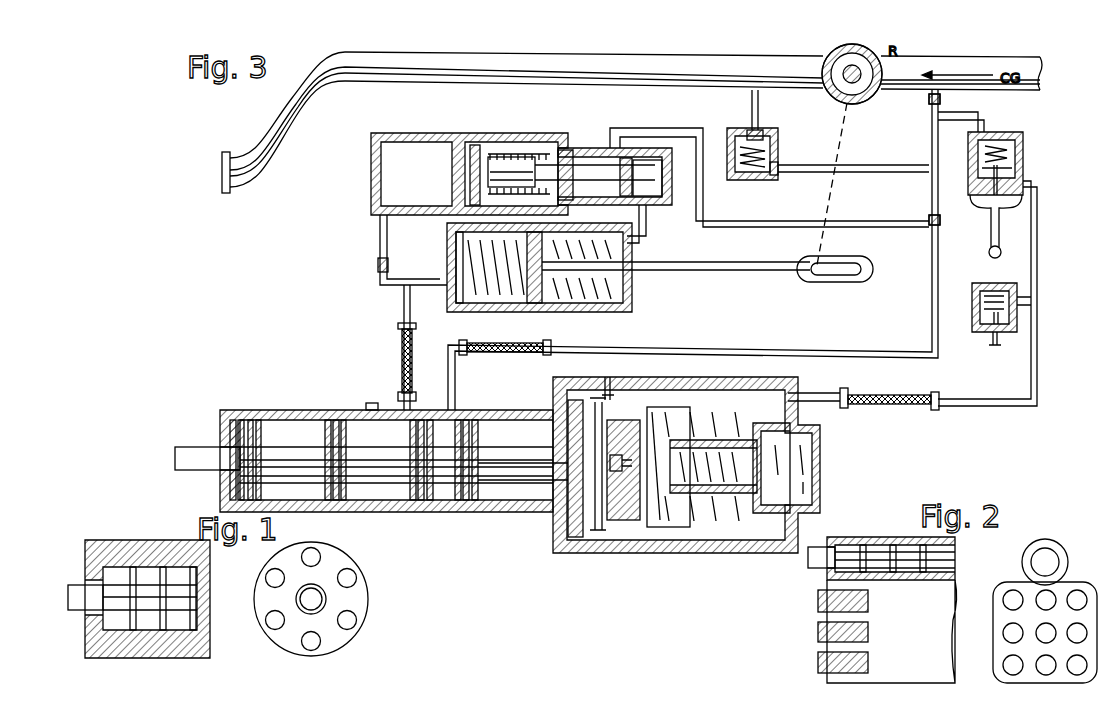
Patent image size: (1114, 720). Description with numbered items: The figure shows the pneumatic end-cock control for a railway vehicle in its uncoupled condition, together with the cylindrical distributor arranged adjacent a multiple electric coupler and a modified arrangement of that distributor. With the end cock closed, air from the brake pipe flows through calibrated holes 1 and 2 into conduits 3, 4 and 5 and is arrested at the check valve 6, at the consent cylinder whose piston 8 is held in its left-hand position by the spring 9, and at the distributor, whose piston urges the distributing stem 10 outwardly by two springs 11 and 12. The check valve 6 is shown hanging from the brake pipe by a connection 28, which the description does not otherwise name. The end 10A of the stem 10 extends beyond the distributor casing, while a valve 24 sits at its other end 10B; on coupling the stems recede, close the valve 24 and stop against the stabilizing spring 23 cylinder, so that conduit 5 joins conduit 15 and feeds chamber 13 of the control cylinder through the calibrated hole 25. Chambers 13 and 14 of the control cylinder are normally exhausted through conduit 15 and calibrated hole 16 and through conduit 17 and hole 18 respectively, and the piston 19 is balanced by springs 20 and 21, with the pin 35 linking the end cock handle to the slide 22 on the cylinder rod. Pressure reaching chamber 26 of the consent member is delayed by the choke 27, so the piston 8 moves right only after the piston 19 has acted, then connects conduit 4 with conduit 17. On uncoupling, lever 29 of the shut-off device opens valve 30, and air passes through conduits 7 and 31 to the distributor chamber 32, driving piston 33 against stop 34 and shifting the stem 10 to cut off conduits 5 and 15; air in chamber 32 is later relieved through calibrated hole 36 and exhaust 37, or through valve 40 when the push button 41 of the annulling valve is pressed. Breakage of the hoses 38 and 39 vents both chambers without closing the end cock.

The calibrated hole 1 is at (929, 99).
The calibrated hole 2 is at (929, 220).
The conduit 3 is at (871, 165).
The conduit 4 is at (690, 128).
The conduit 5 is at (930, 138).
The check valve 6 is at (772, 152).
The conduit 7 is at (950, 122).
The piston 8 is at (523, 160).
The spring 9 is at (550, 150).
The distributing stem 10 is at (418, 425).
The end of stem 10A is at (192, 442).
The end of stem 10B is at (560, 518).
The spring 11 is at (590, 532).
The spring 12 is at (738, 530).
The chamber 13 is at (487, 297).
The chamber 14 is at (590, 302).
The conduit 15 is at (412, 308).
The calibrated hole 16 is at (376, 399).
The conduit 17 is at (648, 218).
The hole 18 is at (660, 172).
The piston 19 is at (532, 304).
The spring 20 is at (470, 302).
The spring 21 is at (628, 308).
The slide 22 is at (832, 284).
The stabilizing spring 23 is at (700, 520).
The valve 24 is at (553, 468).
The calibrated hole 25 is at (393, 303).
The chamber 26 is at (392, 180).
The calibrated hole 27 is at (371, 271).
The pipe 28 is at (759, 113).
The lever 29 is at (990, 237).
The valve 30 is at (1015, 158).
The conduit 31 is at (982, 407).
The distributor chamber 32 is at (768, 538).
The piston 33 is at (628, 540).
The stop 34 is at (597, 537).
The pin 35 is at (810, 277).
The calibrated hole 36 is at (628, 463).
The exhaust 37 is at (612, 378).
The hose 38 is at (412, 360).
The hose 39 is at (505, 353).
The valve 40 is at (973, 324).
The push button 41 is at (995, 346).